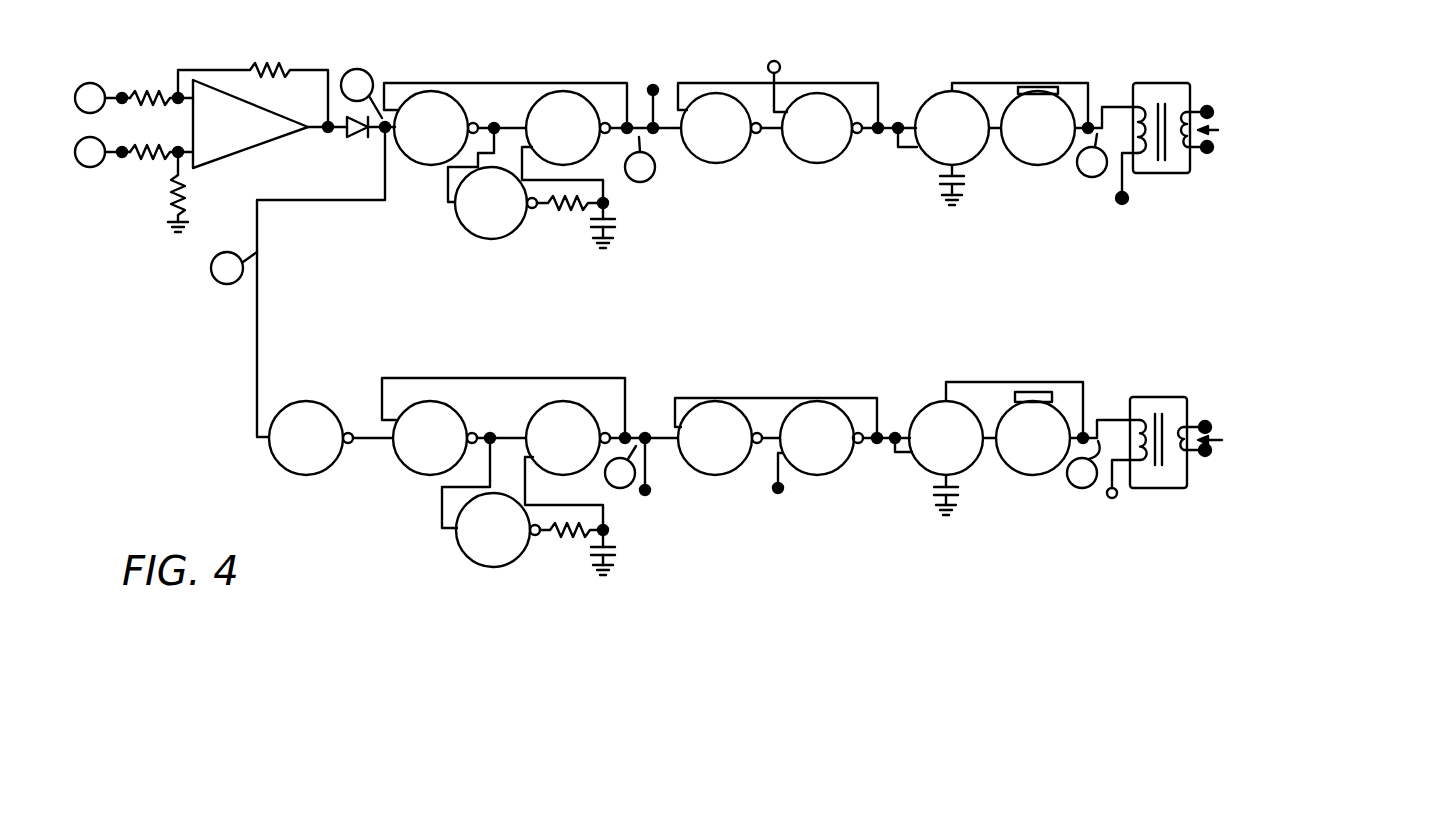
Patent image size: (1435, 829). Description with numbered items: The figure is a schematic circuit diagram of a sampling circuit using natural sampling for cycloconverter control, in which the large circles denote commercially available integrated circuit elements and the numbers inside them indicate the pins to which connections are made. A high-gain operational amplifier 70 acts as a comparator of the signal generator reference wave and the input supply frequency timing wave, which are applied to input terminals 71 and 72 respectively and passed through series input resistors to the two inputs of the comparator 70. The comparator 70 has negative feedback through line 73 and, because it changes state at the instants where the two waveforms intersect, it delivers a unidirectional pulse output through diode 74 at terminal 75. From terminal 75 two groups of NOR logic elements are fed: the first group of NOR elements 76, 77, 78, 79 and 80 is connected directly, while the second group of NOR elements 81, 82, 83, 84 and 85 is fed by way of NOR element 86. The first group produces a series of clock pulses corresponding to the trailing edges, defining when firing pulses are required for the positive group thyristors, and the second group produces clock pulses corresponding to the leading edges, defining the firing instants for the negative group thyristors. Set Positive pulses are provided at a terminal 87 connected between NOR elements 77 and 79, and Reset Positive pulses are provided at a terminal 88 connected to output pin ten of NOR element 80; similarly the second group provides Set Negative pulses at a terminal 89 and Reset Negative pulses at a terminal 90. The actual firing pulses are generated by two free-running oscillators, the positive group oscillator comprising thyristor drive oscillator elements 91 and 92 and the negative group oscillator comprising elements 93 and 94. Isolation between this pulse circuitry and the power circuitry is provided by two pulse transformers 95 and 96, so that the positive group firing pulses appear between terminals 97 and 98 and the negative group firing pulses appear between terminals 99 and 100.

The operational amplifier 70 is at (243, 150).
The input terminal 71 is at (122, 94).
The input terminal 72 is at (122, 157).
The line 73 is at (328, 70).
The diode 74 is at (352, 140).
The terminal 75 is at (388, 133).
The NOR logic element 76 is at (458, 100).
The NOR logic element 77 is at (585, 98).
The NOR logic element 78 is at (461, 222).
The NOR logic element 79 is at (733, 163).
The NOR logic element 80 is at (838, 160).
The NOR logic element 81 is at (440, 402).
The NOR logic element 82 is at (566, 402).
The NOR logic element 83 is at (478, 566).
The NOR logic element 84 is at (722, 402).
The NOR logic element 85 is at (826, 402).
The NOR element 86 is at (326, 410).
The terminal 87 is at (650, 87).
The terminal 88 is at (768, 66).
The terminal 89 is at (651, 490).
The terminal 90 is at (784, 488).
The thyristor drive oscillator element 91 is at (940, 99).
The thyristor drive oscillator element 92 is at (1036, 168).
The thyristor drive oscillator element 93 is at (930, 404).
The thyristor drive oscillator element 94 is at (1035, 398).
The pulse transformer 95 is at (1160, 83).
The pulse transformer 96 is at (1147, 397).
The terminal 97 is at (1211, 104).
The terminal 98 is at (1207, 153).
The terminal 99 is at (1210, 420).
The terminal 100 is at (1208, 457).